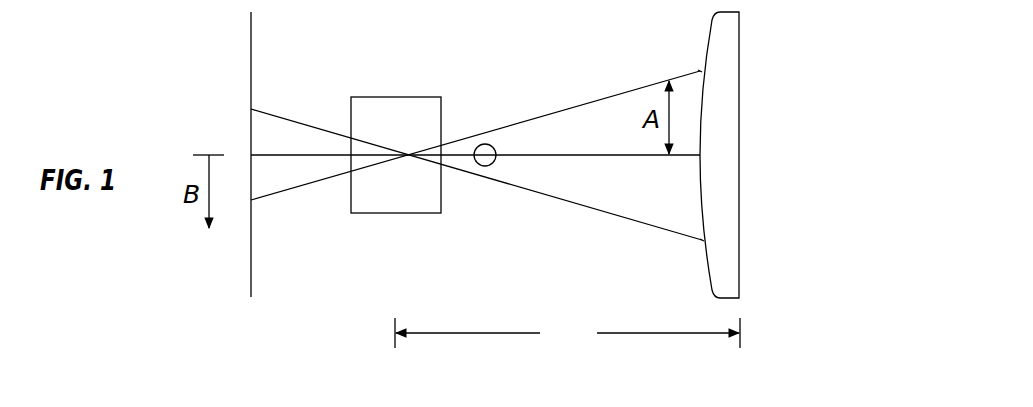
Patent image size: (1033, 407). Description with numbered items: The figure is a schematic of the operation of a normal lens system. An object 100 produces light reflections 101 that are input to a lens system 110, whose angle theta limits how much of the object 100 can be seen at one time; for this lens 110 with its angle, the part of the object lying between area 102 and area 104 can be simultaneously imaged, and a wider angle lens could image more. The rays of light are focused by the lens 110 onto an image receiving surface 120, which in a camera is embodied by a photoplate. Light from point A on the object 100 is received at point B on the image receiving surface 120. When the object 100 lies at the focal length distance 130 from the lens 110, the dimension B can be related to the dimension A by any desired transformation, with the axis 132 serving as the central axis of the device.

The object 100 is at (757, 153).
The light reflections 101 is at (476, 147).
The area 102 is at (748, 88).
The area 104 is at (749, 225).
The lens system 110 is at (378, 137).
The image receiving surface 120 is at (217, 154).
The focal length distance 130 is at (567, 334).
The axis 132 is at (475, 138).